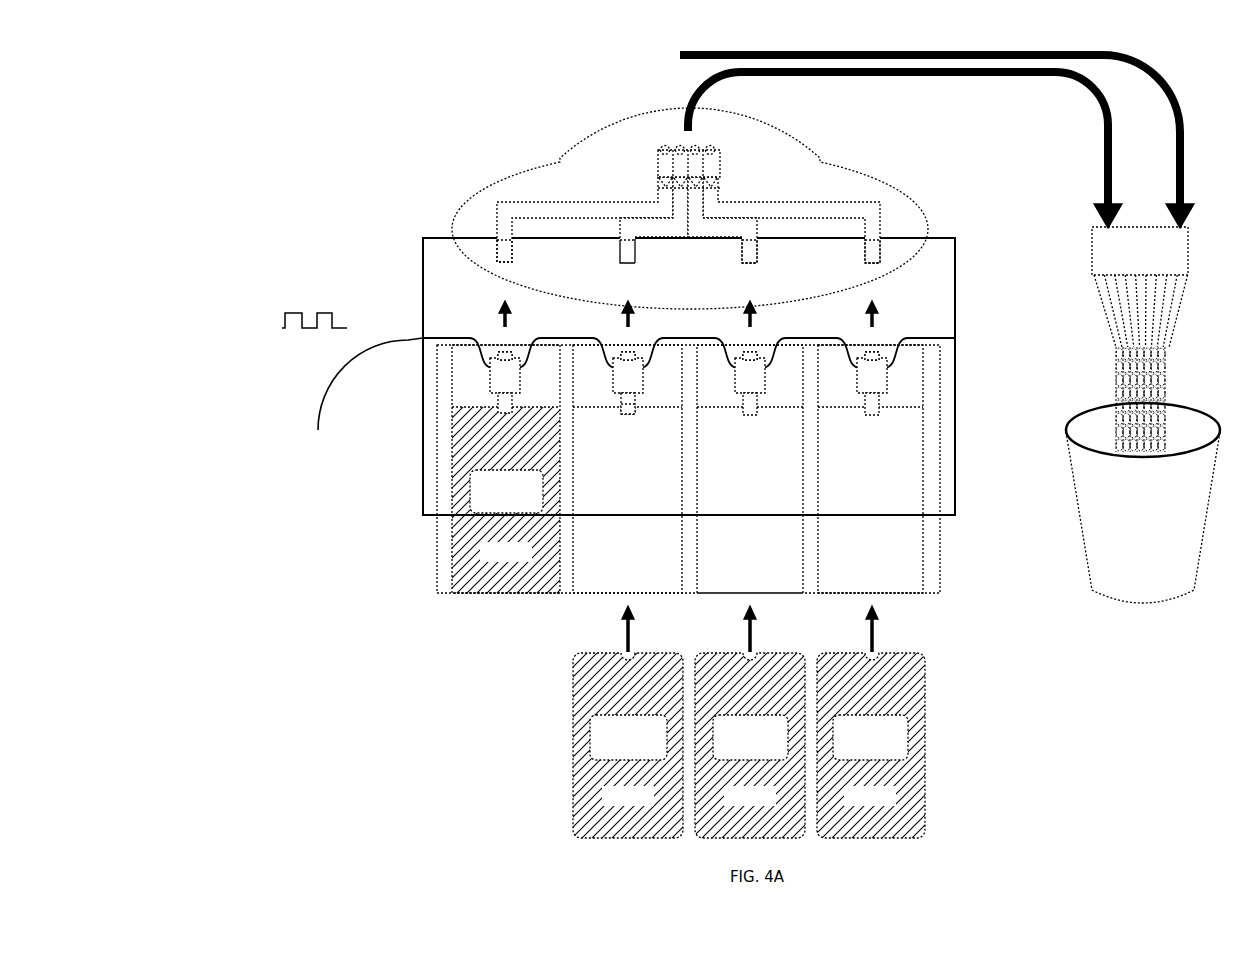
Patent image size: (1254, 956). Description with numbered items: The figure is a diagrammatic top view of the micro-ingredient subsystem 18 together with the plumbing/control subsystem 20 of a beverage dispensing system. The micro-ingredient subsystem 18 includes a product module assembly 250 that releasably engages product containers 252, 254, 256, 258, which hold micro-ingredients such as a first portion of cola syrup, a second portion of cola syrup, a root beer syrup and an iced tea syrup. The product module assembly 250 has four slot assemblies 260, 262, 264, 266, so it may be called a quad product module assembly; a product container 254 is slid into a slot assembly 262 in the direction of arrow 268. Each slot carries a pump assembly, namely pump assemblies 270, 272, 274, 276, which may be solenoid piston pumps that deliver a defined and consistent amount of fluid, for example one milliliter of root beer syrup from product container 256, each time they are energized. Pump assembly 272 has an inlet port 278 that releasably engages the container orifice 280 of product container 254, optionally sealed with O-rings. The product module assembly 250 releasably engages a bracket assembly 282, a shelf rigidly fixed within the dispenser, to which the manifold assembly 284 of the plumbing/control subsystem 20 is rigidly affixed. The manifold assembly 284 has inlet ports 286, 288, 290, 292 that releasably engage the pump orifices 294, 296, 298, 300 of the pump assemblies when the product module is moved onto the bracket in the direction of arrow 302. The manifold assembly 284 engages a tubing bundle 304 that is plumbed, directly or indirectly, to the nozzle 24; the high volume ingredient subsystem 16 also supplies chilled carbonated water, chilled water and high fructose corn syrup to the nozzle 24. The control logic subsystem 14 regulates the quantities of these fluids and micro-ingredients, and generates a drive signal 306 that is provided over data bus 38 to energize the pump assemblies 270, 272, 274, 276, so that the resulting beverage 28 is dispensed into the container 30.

The control logic subsystem 14 is at (312, 467).
The high volume ingredient subsystem 16 is at (733, 137).
The micro-ingredient subsystem 18 is at (232, 245).
The plumbing/control subsystem 20 is at (690, 208).
The nozzle 24 is at (1140, 287).
The beverage 28 is at (1115, 393).
The container 30 is at (1143, 503).
The data bus 38 is at (318, 407).
The product module assembly 250 is at (942, 580).
The product container 252 is at (506, 500).
The product container 254 is at (628, 745).
The product container 256 is at (750, 745).
The product container 258 is at (871, 745).
The slot assembly 260 is at (473, 594).
The slot assembly 262 is at (591, 594).
The slot assembly 264 is at (714, 594).
The slot assembly 266 is at (834, 594).
The arrow 268 is at (626, 646).
The pump assembly 270 is at (497, 378).
The pump assembly 272 is at (619, 378).
The pump assembly 274 is at (740, 378).
The pump assembly 276 is at (860, 378).
The inlet port 278 is at (628, 415).
The container orifice 280 is at (634, 652).
The bracket assembly 282 is at (956, 316).
The manifold assembly 284 is at (748, 204).
The inlet port 286 is at (503, 264).
The inlet port 288 is at (627, 265).
The inlet port 290 is at (749, 265).
The inlet port 292 is at (871, 265).
The pump orifice 294 is at (506, 347).
The pump orifice 296 is at (630, 347).
The pump orifice 298 is at (752, 347).
The pump orifice 300 is at (874, 347).
The arrow 302 is at (500, 322).
The tubing bundle 304 is at (722, 162).
The drive signal 306 is at (286, 318).